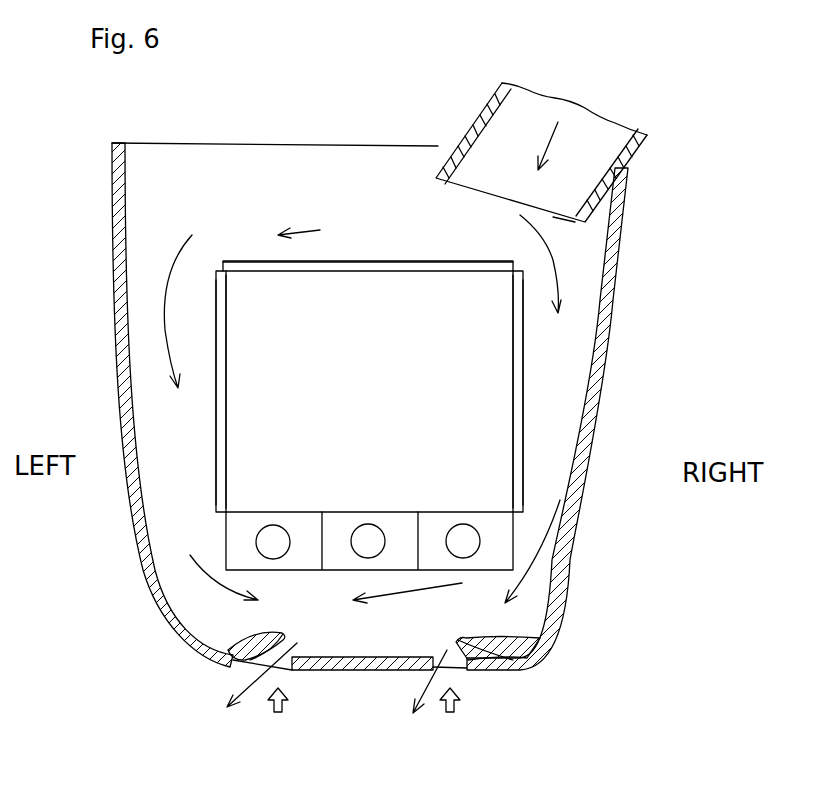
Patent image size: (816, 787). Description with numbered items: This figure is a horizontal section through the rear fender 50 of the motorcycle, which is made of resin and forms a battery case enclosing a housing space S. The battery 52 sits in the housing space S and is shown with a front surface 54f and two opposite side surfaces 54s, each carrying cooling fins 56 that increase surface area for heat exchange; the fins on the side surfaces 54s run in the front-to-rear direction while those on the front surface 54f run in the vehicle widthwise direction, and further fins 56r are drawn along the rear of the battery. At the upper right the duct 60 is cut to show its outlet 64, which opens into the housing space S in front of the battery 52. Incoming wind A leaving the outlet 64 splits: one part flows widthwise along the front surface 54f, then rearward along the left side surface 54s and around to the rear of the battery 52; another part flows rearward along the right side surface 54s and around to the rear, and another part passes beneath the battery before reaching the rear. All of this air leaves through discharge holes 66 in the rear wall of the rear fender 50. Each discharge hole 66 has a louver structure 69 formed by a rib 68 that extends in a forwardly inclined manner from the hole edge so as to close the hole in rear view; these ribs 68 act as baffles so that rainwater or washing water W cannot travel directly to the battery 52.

The rear fender 50 is at (602, 378).
The battery 52 is at (532, 332).
The front surface 54f is at (385, 261).
The side surface 54s is at (218, 463).
The cooling fins 56 is at (243, 261).
The rear clearance gap 56r is at (330, 572).
The duct 60 is at (636, 152).
The outlet 64 is at (553, 217).
The discharge hole 66 is at (283, 667).
The rib 68 is at (220, 650).
The louver structure 69 is at (381, 647).
The incoming wind A is at (320, 228).
The washing water W is at (290, 703).
The housing space S is at (188, 205).